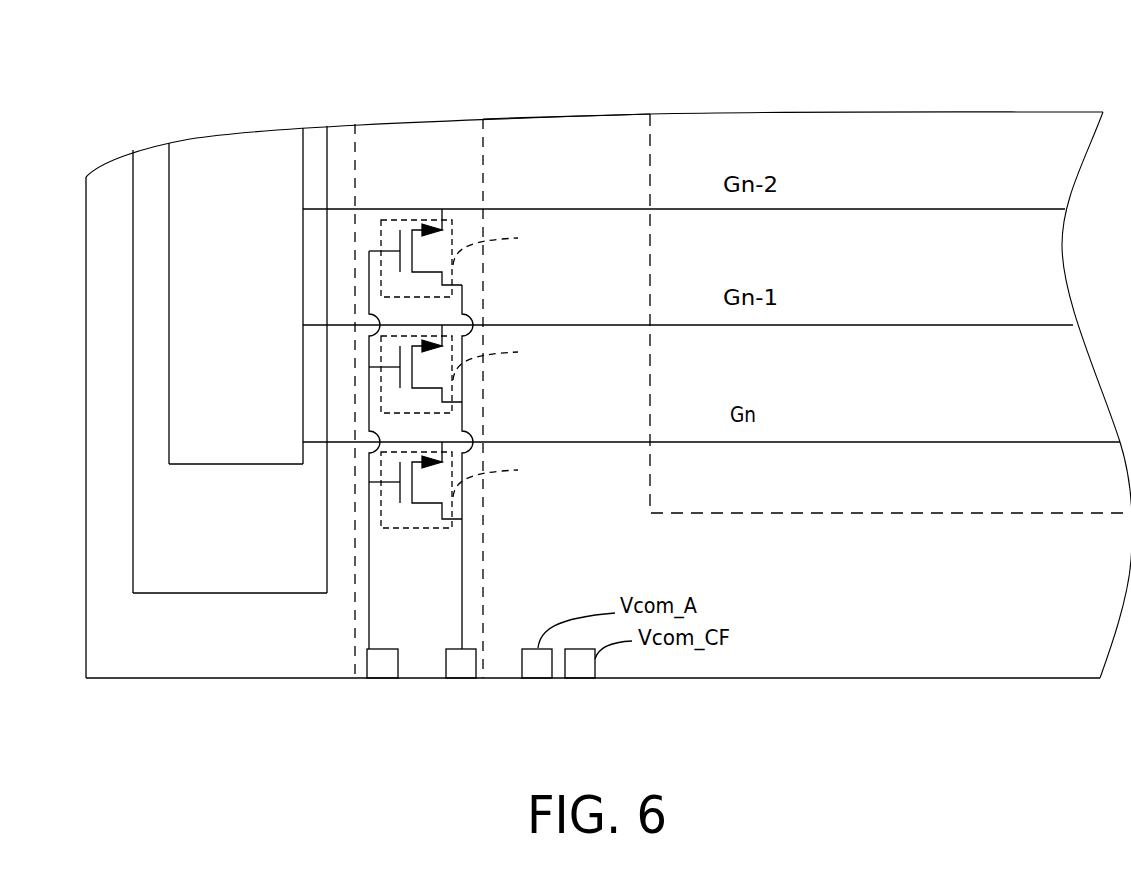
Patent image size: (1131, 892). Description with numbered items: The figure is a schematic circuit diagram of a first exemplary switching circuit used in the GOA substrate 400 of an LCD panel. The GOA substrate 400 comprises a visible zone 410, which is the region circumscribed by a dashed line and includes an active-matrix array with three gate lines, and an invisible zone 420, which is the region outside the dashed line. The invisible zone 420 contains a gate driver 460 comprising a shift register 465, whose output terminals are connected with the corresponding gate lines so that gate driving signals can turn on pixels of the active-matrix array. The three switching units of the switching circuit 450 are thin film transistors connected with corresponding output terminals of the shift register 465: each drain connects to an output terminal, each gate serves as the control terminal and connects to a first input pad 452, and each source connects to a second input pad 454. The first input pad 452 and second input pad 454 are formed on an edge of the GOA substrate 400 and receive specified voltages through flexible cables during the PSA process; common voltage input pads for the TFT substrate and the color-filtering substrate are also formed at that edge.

The GOA substrate 400 is at (975, 112).
The visible zone 410 is at (748, 128).
The invisible zone 420 is at (522, 127).
The switching circuit 450 is at (378, 128).
The first input pad 452 is at (382, 680).
The second input pad 454 is at (460, 680).
The gate driver 460 is at (152, 151).
The shift register 465 is at (255, 139).